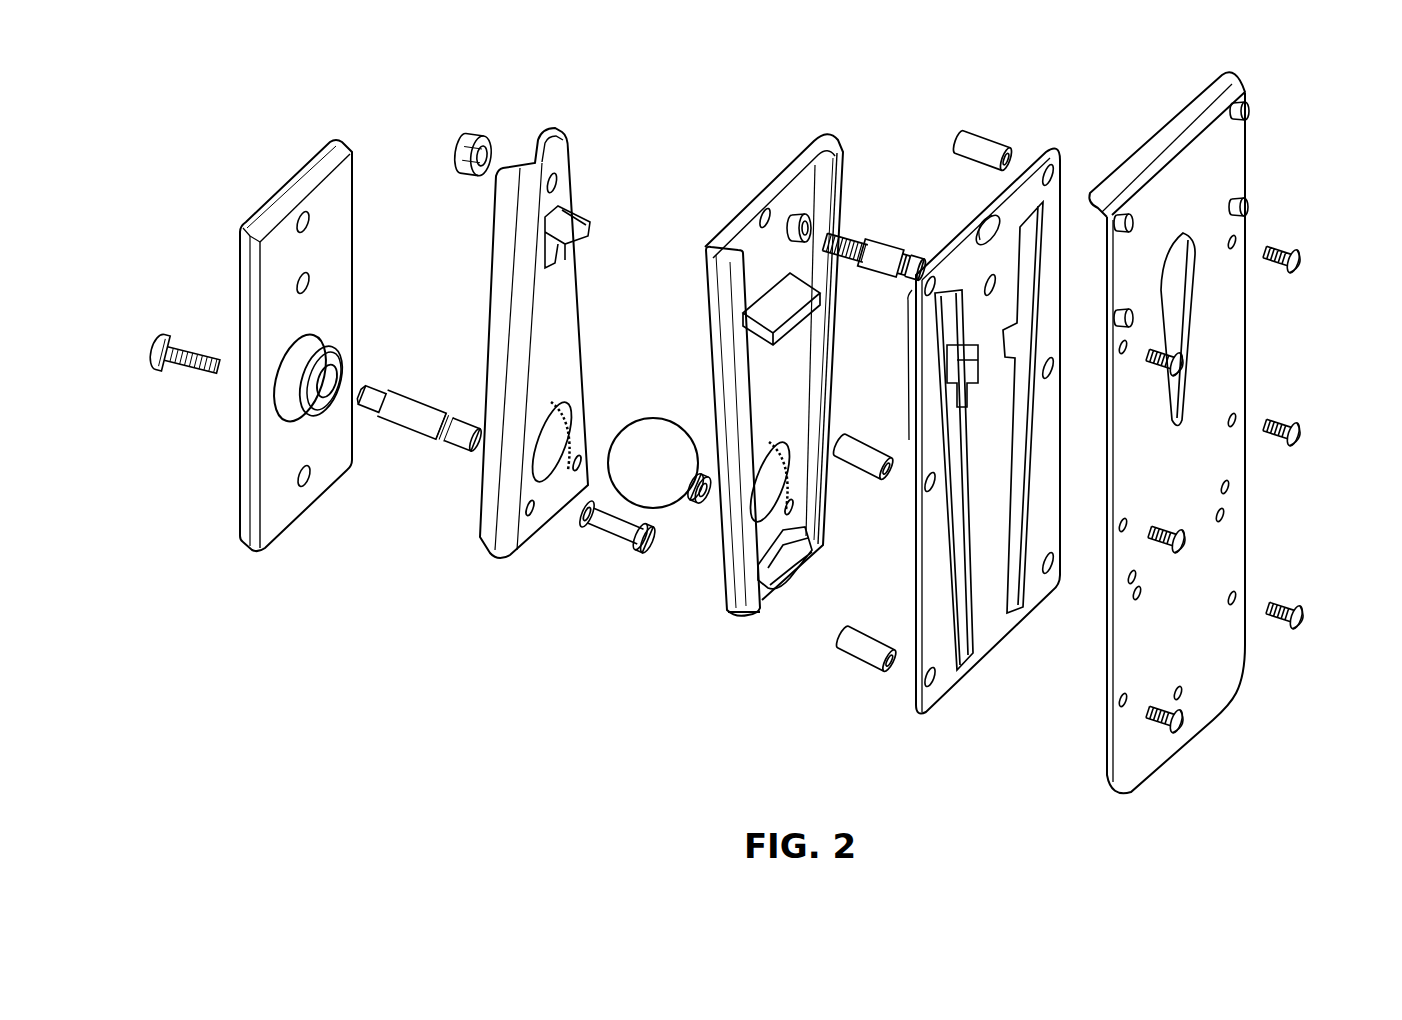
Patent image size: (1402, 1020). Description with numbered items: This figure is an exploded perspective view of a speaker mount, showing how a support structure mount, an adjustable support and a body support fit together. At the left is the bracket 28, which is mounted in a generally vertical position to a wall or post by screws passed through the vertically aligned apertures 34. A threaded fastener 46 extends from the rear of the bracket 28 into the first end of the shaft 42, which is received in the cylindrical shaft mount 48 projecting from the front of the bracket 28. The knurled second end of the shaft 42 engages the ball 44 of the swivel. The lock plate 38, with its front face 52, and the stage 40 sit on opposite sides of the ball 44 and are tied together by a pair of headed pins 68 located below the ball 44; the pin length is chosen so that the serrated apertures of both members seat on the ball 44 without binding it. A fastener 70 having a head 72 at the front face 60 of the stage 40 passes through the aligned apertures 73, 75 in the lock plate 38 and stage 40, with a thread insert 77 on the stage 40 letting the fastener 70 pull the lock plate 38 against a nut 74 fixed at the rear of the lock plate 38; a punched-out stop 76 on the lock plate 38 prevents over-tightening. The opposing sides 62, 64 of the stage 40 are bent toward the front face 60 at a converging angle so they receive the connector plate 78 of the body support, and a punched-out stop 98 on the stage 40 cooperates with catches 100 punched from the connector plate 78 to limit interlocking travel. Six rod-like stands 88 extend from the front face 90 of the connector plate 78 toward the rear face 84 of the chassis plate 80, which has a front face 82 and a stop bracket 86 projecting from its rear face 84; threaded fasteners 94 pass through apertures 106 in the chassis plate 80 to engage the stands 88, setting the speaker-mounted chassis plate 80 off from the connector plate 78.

The bracket 28 is at (304, 345).
The apertures 34 is at (315, 280).
The lock plate 38 is at (575, 358).
The stage 40 is at (723, 605).
The shaft 42 is at (418, 438).
The ball 44 is at (655, 412).
The threaded fastener 46 is at (160, 367).
The shaft mount 48 is at (328, 349).
The front face 52 is at (533, 498).
The front face 60 is at (779, 359).
The side 62 is at (830, 397).
The side 64 is at (740, 305).
The pins 68 is at (612, 545).
The fastener 70 is at (889, 220).
The head 72 is at (915, 249).
The aperture 73 is at (560, 181).
The nut 74 is at (448, 153).
The aperture 75 is at (758, 215).
The stop 76 is at (590, 236).
The thread insert 77 is at (803, 213).
The connector plate 78 is at (999, 443).
The chassis plate 80 is at (1163, 432).
The front face 82 is at (1222, 298).
The rear face 84 is at (1100, 625).
The stop bracket 86 is at (1155, 125).
The stands 88 is at (988, 138).
The front face 90 is at (950, 683).
The threaded fasteners 94 is at (1295, 458).
The stop 98 is at (800, 335).
The catch 100 is at (917, 472).
The apertures 106 is at (1122, 708).